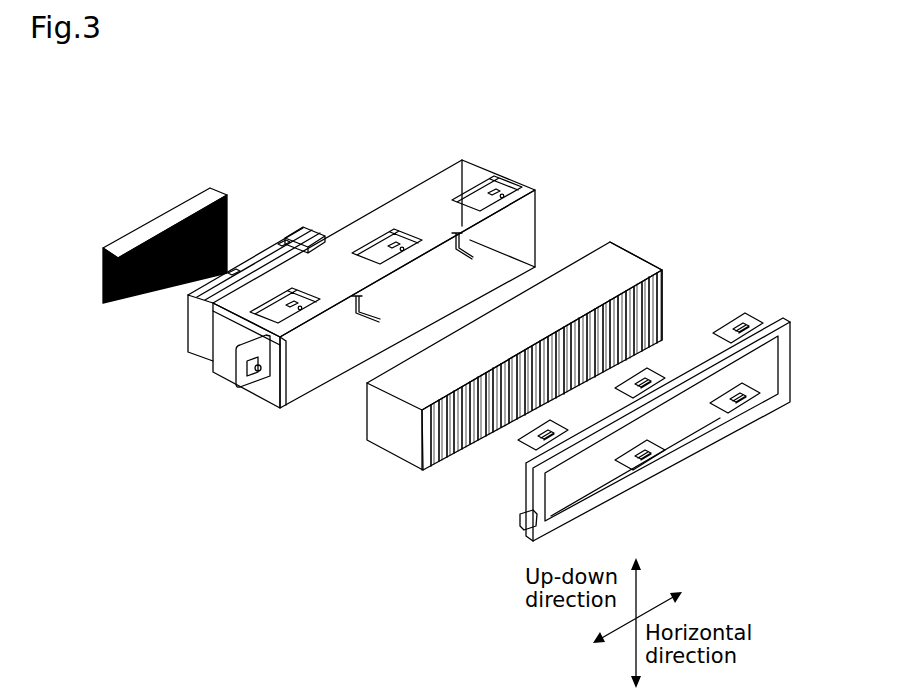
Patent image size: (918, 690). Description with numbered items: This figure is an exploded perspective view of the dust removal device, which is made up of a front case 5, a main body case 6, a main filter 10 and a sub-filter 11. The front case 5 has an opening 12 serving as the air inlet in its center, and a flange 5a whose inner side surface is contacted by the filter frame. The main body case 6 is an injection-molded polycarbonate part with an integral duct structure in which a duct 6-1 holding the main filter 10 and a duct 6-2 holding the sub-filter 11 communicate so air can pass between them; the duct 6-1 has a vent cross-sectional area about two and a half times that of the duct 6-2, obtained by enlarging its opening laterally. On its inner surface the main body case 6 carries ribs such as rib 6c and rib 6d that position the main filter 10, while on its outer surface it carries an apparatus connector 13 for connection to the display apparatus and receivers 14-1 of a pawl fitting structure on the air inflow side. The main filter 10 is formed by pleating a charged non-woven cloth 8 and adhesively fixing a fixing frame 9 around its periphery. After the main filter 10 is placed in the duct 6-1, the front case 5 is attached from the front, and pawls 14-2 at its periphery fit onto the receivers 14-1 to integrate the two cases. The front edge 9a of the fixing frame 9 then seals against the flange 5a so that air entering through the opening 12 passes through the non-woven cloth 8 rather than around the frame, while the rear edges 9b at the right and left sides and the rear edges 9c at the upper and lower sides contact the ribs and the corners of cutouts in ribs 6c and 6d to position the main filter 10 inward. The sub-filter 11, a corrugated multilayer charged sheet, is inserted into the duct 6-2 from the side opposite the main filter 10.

The front case 5 is at (635, 372).
The flange 5a is at (524, 494).
The main body case 6 is at (413, 275).
The duct 6-1 is at (281, 423).
The duct 6-2 is at (209, 382).
The rib 6c is at (366, 318).
The rib 6d is at (474, 251).
The non-woven cloth 8 is at (438, 436).
The fixing frame 9 is at (495, 363).
The front edge 9a is at (421, 443).
The rear edges 9b is at (372, 405).
The rear edges 9c is at (567, 268).
The main filter 10 is at (611, 241).
The sub-filter 11 is at (198, 181).
The opening 12 is at (672, 430).
The apparatus connector 13 is at (282, 236).
The receiver 14-1 is at (500, 192).
The pawls 14-2 is at (729, 322).